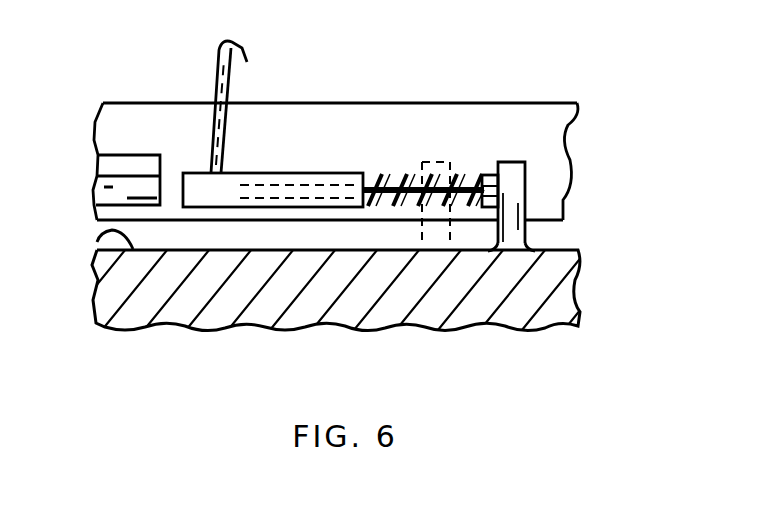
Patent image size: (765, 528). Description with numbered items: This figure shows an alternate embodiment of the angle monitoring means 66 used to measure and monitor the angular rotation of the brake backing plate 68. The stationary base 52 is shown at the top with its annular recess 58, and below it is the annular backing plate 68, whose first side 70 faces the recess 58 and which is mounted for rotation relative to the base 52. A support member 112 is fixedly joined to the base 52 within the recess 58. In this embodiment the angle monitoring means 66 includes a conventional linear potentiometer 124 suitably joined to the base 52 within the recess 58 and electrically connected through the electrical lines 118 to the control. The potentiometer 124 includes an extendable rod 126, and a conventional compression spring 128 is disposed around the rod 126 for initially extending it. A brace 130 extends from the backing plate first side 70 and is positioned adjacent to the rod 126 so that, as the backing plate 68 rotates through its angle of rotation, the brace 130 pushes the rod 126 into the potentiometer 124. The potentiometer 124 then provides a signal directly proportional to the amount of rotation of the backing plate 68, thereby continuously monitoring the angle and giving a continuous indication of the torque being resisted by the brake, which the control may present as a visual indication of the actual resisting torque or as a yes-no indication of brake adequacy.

The stationary base 52 is at (530, 97).
The annular recess 58 is at (447, 117).
The angle monitoring means 66 is at (350, 140).
The annular backing plate 68 is at (309, 324).
The first side 70 is at (96, 243).
The support member 112 is at (133, 167).
The electrical lines 118 is at (212, 73).
The linear potentiometer 124 is at (280, 172).
The extendable rod 126 is at (487, 174).
The compression spring 128 is at (378, 180).
The brace 130 is at (525, 189).